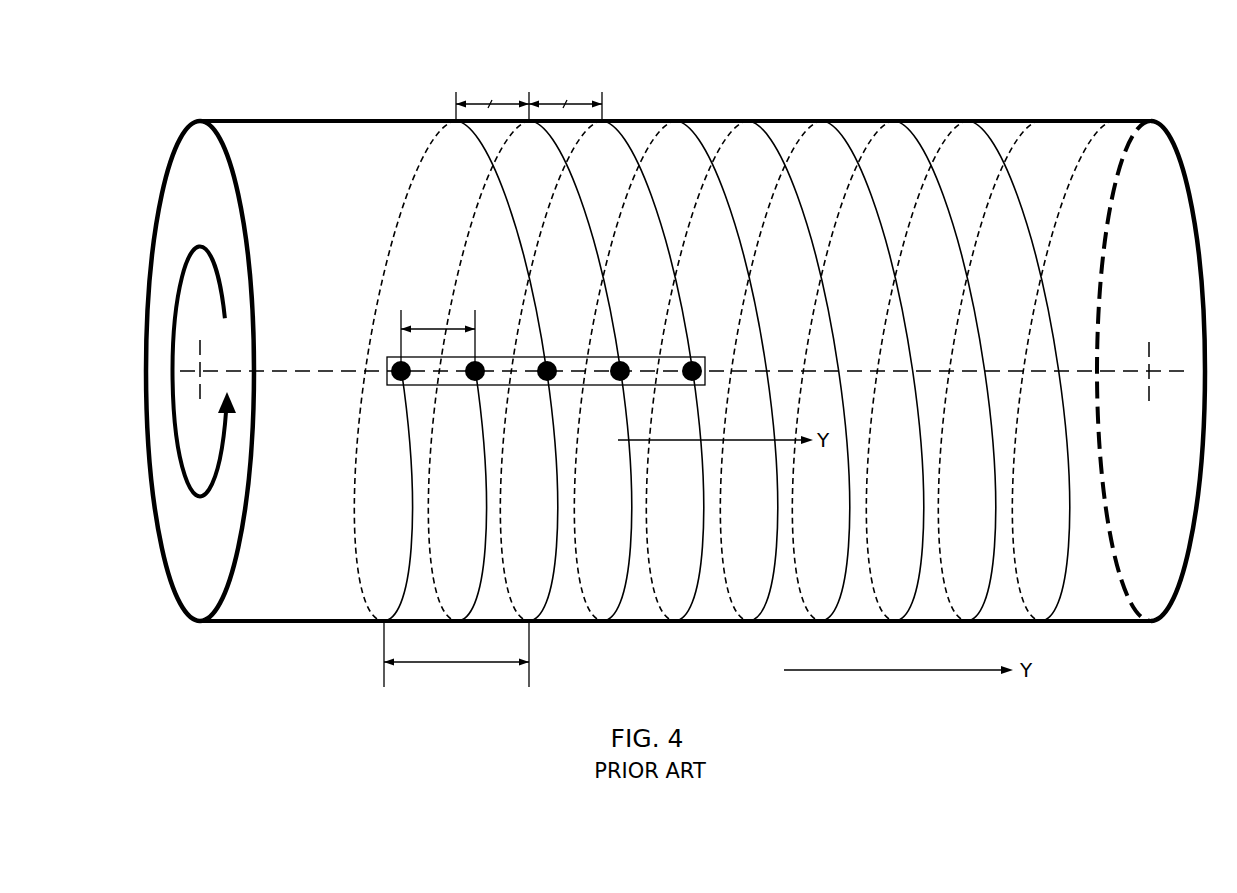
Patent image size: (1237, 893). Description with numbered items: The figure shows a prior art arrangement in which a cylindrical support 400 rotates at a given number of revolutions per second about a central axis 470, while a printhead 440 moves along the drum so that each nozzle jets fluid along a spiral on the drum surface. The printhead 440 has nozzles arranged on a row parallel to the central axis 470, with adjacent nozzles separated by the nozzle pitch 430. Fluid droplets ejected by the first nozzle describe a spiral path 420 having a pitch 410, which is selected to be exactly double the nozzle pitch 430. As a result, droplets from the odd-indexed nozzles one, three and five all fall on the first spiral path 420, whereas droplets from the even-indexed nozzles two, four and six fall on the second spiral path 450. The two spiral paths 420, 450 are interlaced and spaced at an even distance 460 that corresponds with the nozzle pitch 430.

The cylindrical support 400 is at (307, 205).
The pitch 410 is at (433, 663).
The spiral path 420 is at (363, 405).
The nozzle pitch 430 is at (428, 328).
The printhead 440 is at (700, 356).
The second spiral path 450 is at (437, 408).
The even distance 460 is at (485, 102).
The central axis 470 is at (1117, 372).